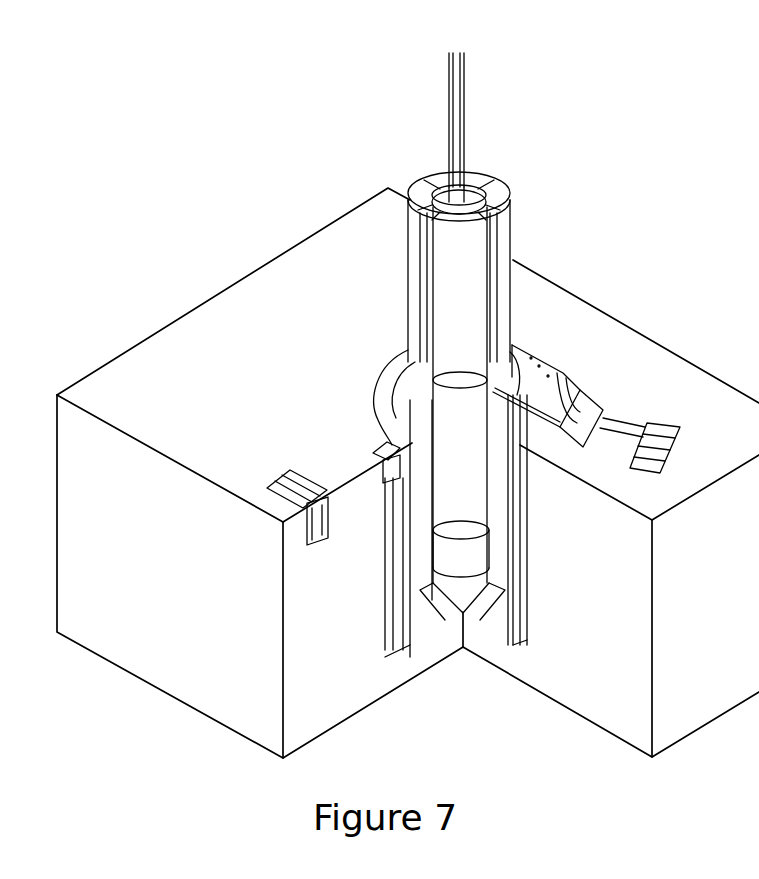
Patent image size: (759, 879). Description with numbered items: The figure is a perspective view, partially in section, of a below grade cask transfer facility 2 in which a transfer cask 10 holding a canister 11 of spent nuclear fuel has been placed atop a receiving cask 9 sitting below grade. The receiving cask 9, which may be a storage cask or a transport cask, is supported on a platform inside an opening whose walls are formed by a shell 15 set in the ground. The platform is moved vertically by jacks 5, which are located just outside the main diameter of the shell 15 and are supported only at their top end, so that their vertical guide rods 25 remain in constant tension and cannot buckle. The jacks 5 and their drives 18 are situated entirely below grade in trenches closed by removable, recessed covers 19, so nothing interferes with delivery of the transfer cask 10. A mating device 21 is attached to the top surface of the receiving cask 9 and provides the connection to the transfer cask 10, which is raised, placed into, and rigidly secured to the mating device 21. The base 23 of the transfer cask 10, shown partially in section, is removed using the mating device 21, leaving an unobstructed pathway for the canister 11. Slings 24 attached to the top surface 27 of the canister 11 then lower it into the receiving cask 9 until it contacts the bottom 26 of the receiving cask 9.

The below grade cask transfer facility 2 is at (358, 375).
The jacks 5 is at (385, 472).
The receiving cask 9 is at (398, 425).
The transfer cask 10 is at (512, 251).
The canister 11 is at (465, 290).
The shell 15 is at (377, 413).
The drives 18 is at (313, 543).
The covers 19 is at (660, 428).
The mating device 21 is at (557, 362).
The base 23 is at (553, 405).
The slings 24 is at (467, 140).
The guide rods 25 is at (383, 603).
The bottom 26 is at (465, 613).
The top surface 27 is at (470, 197).